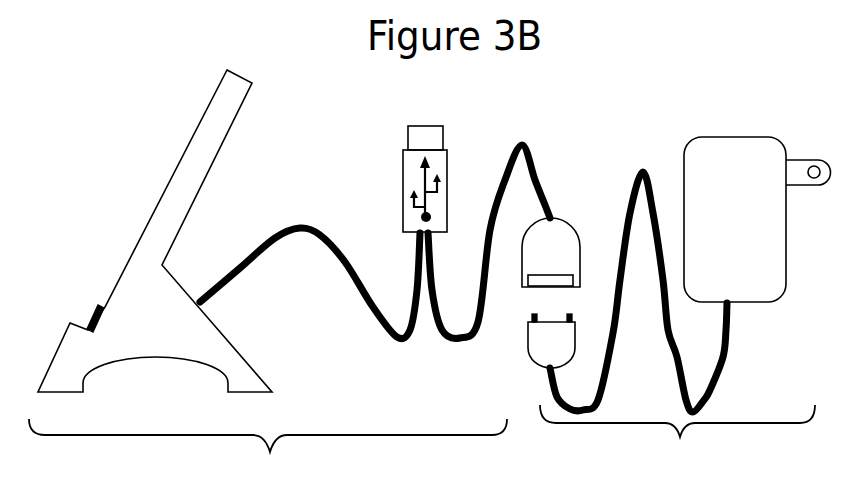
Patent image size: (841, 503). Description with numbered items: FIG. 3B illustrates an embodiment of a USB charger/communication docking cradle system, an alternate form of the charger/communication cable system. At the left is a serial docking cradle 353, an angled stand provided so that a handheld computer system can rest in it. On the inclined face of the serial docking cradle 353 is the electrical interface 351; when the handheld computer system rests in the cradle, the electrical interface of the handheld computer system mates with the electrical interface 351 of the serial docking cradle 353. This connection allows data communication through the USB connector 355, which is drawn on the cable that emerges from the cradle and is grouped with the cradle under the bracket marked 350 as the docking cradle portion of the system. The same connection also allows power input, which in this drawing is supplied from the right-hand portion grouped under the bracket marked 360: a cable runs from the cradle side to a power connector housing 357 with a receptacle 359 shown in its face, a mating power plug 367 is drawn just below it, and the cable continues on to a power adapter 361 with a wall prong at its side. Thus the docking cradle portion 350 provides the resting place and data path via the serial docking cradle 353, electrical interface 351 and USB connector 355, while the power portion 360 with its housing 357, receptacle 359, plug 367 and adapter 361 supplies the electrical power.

The docking station assembly 350 is at (289, 313).
The electrical interface 351 is at (90, 310).
The serial docking cradle 353 is at (147, 218).
The USB connector 355 is at (400, 163).
The power connector housing 357 is at (572, 220).
The power connector receptacle 359 is at (552, 282).
The power plug 367 is at (551, 341).
The power adapter assembly 360 is at (677, 316).
The power adapter 361 is at (757, 219).